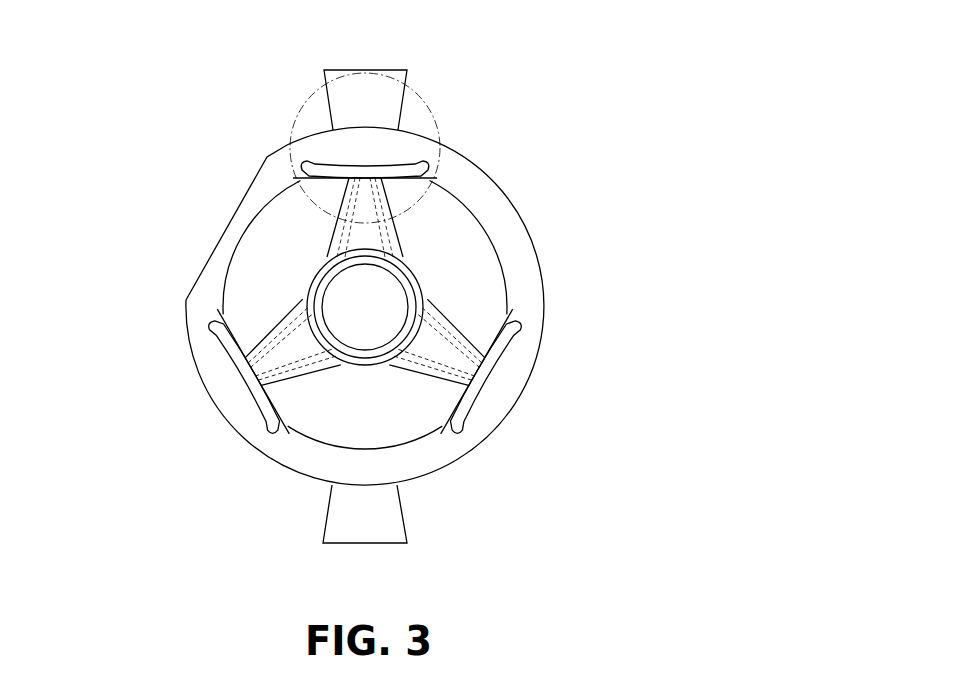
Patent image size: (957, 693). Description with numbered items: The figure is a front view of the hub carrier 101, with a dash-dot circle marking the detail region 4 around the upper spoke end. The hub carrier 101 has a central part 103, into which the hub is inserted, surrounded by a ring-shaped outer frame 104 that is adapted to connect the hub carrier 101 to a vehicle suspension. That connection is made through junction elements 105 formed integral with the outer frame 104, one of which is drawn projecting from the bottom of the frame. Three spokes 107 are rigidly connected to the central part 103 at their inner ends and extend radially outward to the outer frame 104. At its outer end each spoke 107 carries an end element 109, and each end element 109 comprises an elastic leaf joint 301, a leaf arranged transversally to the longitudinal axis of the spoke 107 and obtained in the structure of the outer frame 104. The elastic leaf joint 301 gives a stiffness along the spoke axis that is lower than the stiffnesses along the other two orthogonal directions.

The detail region of FIG. 4 is at (303, 105).
The hub carrier 101 is at (612, 142).
The central part 103 is at (410, 278).
The outer frame 104 is at (515, 378).
The junction element 105 is at (355, 512).
The spoke 107 is at (363, 225).
The end element 109 is at (360, 181).
The elastic leaf joint 301 is at (403, 177).